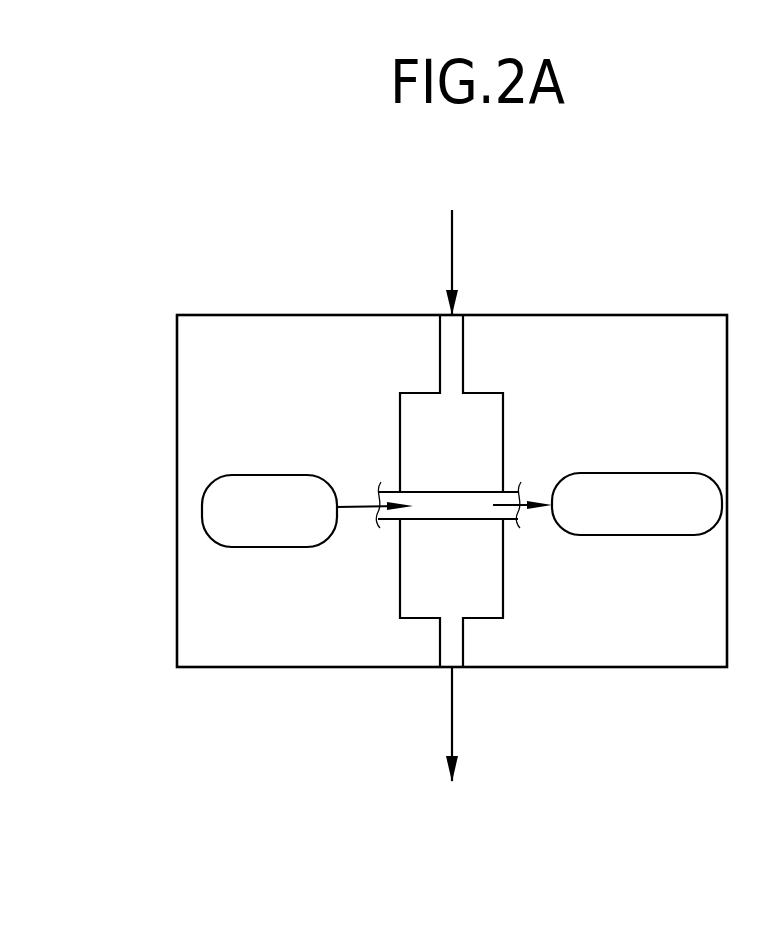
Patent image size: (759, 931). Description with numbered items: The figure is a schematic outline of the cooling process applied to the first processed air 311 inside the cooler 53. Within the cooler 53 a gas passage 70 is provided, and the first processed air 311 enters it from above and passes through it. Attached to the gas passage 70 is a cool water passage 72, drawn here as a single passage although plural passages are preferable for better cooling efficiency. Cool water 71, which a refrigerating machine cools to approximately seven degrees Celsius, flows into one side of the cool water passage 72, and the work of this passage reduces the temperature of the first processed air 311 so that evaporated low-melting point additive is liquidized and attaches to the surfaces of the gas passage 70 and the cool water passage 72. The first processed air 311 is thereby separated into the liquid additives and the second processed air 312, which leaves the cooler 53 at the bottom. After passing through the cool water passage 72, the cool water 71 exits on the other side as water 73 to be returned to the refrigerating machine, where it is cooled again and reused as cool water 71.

The cooler 53 is at (171, 685).
The gas passage 70 is at (400, 402).
The cool water 71 is at (290, 547).
The cool water passage 72 is at (430, 519).
The water to be returned 73 is at (600, 535).
The first processed air 311 is at (452, 238).
The second processed air 312 is at (452, 715).